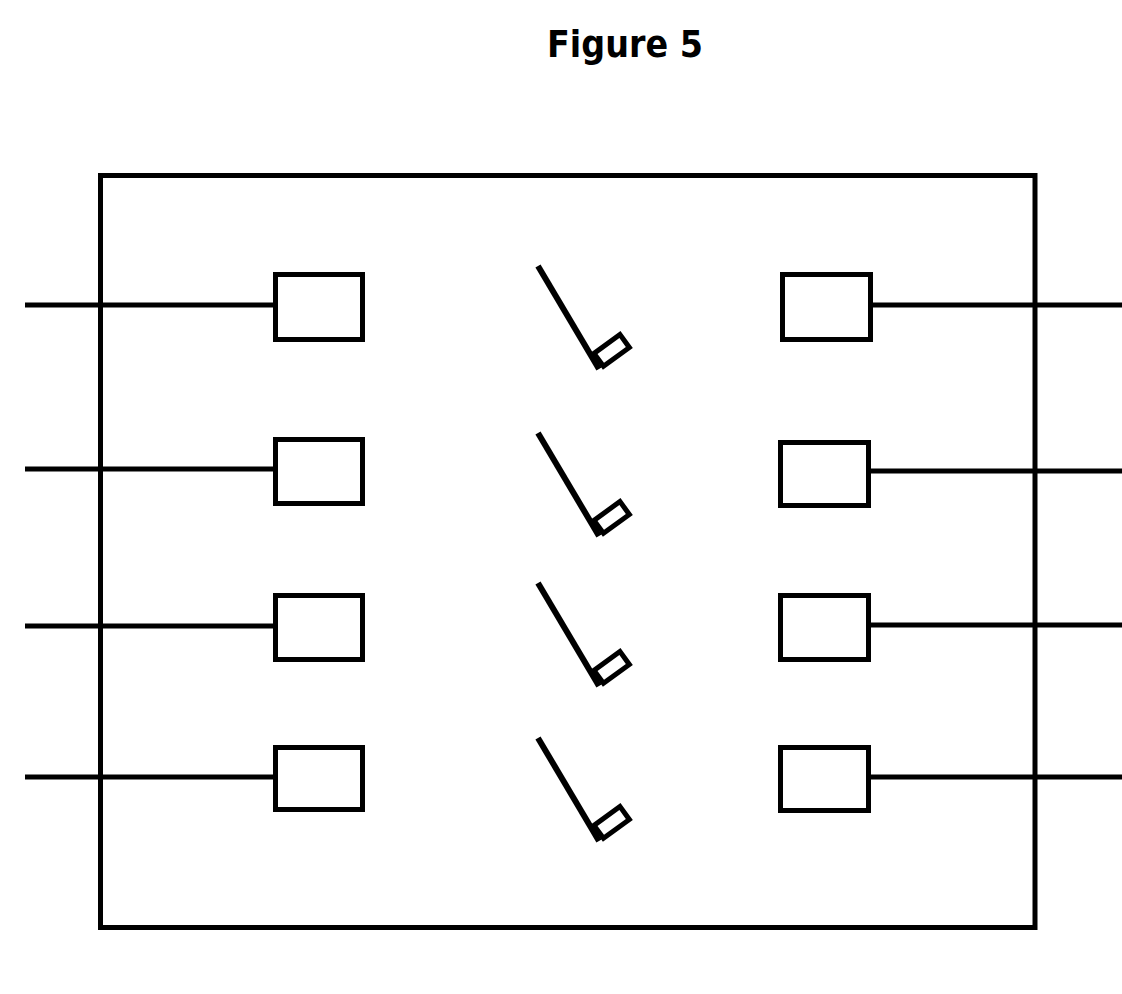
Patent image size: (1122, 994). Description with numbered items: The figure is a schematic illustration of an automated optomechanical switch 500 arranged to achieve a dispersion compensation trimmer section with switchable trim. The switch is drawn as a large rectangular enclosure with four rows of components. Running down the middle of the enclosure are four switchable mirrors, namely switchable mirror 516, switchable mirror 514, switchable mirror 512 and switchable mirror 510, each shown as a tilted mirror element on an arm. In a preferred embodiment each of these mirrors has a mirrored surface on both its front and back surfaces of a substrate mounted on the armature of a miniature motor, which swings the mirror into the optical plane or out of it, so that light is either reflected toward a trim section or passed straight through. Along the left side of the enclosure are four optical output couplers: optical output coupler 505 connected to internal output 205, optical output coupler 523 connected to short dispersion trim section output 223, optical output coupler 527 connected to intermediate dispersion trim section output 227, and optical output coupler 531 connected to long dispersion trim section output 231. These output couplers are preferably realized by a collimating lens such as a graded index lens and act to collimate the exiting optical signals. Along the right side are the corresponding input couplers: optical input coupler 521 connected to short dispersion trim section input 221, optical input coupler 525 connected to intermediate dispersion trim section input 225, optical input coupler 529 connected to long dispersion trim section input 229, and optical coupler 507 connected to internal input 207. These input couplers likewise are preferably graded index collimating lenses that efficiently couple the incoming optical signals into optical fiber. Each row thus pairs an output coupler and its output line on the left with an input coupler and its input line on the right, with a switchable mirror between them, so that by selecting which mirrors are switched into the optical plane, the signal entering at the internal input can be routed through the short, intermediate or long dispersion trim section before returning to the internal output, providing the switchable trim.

The automated optomechanical switch 500 is at (568, 552).
The internal output 205 is at (150, 325).
The short dispersion trim section output 223 is at (150, 490).
The intermediate dispersion trim section output 227 is at (150, 647).
The long dispersion trim section output 231 is at (150, 797).
The short dispersion trim section input 221 is at (996, 325).
The intermediate dispersion trim section input 225 is at (996, 491).
The long dispersion trim section input 229 is at (996, 645).
The internal input 207 is at (996, 797).
The optical output coupler 505 is at (319, 307).
The optical output coupler 523 is at (319, 472).
The optical output coupler 527 is at (319, 628).
The optical output coupler 531 is at (319, 779).
The optical input coupler 521 is at (827, 307).
The optical input coupler 525 is at (825, 474).
The optical input coupler 529 is at (825, 628).
The optical coupler 507 is at (825, 779).
The switchable mirror 516 is at (616, 323).
The switchable mirror 514 is at (616, 490).
The switchable mirror 512 is at (616, 640).
The switchable mirror 510 is at (616, 795).